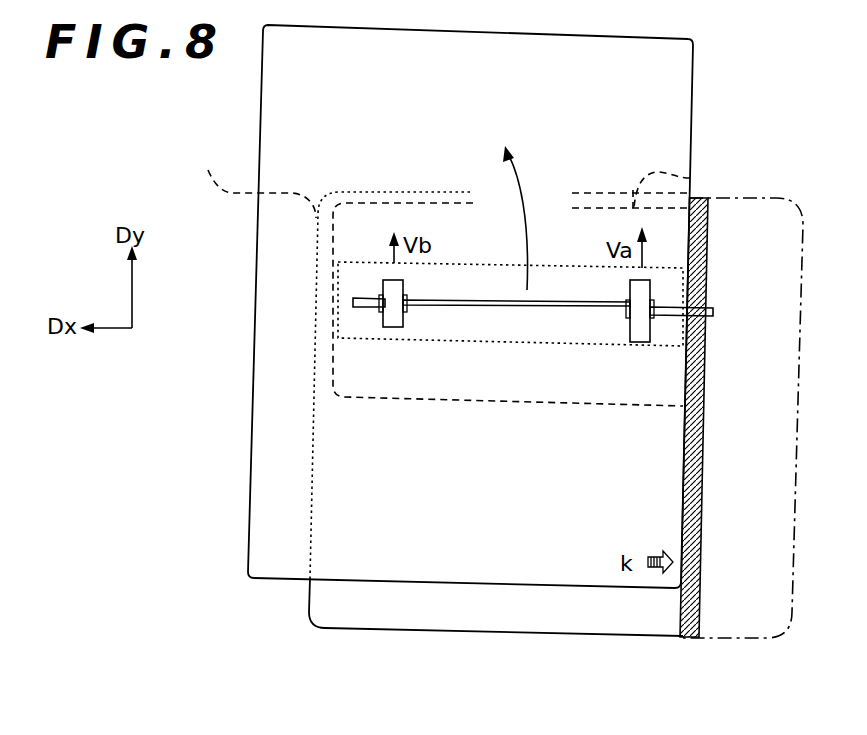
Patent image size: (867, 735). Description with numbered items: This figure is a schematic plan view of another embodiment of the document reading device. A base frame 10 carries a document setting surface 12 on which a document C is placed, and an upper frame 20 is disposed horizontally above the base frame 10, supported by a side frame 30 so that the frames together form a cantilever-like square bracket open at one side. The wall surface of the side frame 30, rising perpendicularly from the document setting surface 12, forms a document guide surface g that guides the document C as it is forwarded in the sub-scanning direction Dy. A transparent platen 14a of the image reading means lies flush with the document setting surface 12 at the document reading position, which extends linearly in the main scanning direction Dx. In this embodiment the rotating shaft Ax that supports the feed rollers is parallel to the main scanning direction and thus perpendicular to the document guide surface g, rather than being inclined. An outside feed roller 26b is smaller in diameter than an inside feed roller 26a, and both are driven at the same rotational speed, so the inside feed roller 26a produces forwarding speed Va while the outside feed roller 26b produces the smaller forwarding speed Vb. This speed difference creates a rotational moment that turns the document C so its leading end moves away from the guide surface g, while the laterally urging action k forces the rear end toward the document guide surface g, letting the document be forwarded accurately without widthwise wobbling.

The base frame 10 is at (247, 182).
The document setting surface 12 is at (326, 604).
The transparent platen 14a is at (455, 342).
The upper frame 20 is at (690, 178).
The inside feed roller 26a is at (645, 293).
The outside feed roller 26b is at (385, 283).
The side frame 30 is at (742, 198).
The document C is at (251, 486).
The document guide surface g is at (683, 610).
The rotating shaft Ax is at (353, 248).